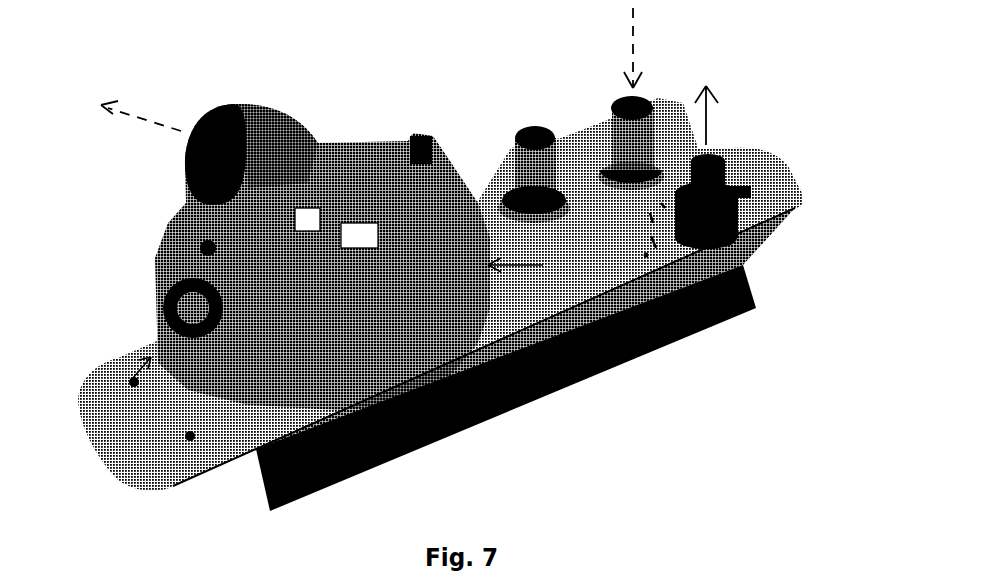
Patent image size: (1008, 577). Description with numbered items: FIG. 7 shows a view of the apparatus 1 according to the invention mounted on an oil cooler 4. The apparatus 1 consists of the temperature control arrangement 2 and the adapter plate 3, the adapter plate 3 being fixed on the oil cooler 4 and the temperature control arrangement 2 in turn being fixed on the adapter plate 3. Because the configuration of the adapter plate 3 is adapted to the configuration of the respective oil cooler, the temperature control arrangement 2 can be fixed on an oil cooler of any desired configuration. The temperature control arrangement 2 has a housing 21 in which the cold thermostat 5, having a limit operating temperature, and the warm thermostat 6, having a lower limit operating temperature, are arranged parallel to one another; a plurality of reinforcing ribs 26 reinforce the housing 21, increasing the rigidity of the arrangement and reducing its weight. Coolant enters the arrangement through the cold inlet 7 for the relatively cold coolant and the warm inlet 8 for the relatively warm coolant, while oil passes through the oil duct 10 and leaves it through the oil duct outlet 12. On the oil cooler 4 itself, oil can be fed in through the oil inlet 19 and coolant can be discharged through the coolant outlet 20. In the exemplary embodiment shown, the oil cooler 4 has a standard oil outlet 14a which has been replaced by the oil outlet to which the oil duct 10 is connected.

The apparatus 1 is at (84, 156).
The temperature control arrangement 2 is at (342, 116).
The adapter plate 3 is at (412, 452).
The oil cooler 4 is at (750, 240).
The cold thermostat 5 is at (359, 236).
The warm thermostat 6 is at (307, 220).
The cold inlet 7 is at (456, 430).
The warm inlet 8 is at (150, 313).
The oil duct 10 is at (247, 128).
The oil duct outlet 12 is at (188, 102).
The oil outlet 14a is at (503, 147).
The oil inlet 19 is at (617, 127).
The coolant outlet 20 is at (745, 190).
The housing 21 is at (187, 243).
The reinforcing ribs 26 is at (353, 148).